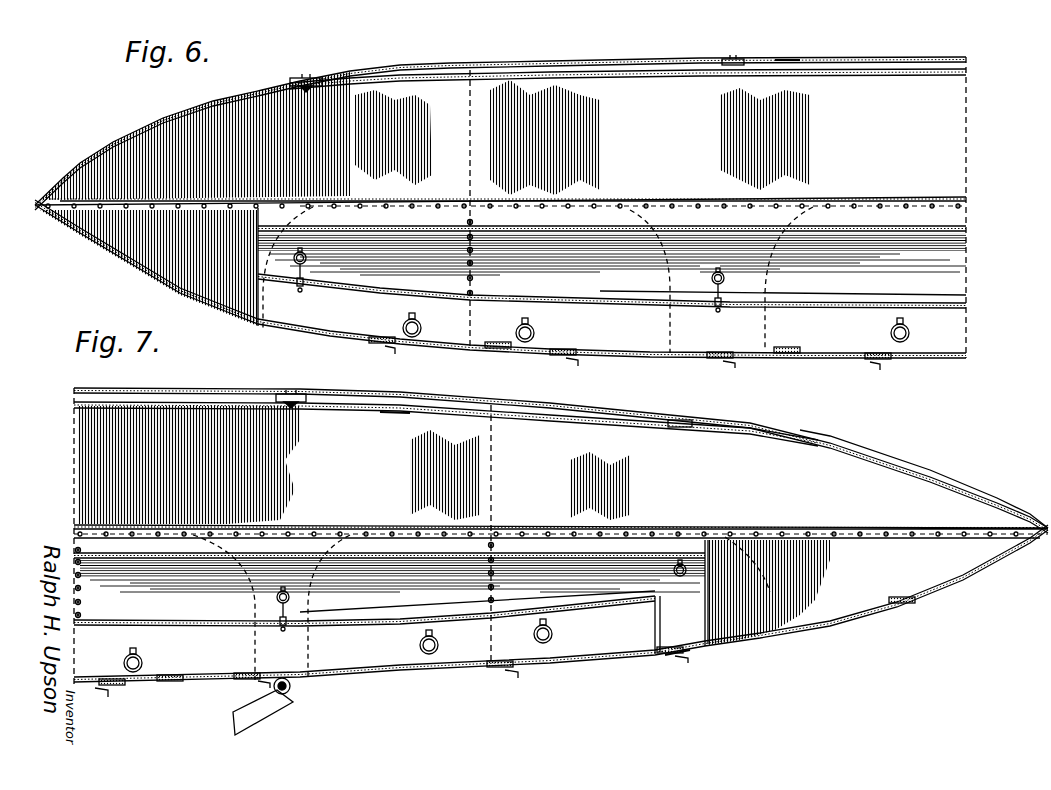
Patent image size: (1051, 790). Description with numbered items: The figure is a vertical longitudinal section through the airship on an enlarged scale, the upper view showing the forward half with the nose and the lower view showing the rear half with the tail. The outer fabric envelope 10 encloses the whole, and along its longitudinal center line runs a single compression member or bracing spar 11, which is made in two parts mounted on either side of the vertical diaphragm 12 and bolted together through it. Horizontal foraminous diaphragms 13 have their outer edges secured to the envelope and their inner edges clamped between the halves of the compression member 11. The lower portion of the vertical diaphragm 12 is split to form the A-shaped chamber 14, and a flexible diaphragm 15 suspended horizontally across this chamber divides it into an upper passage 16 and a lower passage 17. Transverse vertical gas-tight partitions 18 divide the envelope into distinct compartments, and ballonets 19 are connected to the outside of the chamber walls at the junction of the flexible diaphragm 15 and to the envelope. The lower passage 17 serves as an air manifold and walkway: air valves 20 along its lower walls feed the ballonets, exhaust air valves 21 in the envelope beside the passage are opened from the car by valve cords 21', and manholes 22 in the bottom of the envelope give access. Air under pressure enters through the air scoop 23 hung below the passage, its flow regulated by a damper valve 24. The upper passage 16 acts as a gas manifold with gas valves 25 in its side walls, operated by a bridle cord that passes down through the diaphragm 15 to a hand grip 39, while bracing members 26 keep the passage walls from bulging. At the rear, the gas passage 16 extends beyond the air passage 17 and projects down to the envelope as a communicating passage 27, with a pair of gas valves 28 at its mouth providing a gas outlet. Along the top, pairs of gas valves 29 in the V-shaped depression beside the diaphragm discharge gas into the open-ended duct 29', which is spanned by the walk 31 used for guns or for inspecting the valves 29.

In FIG. 6, the envelope 10 is at (264, 88).
In FIG. 7, the envelope 10 is at (872, 452).
In FIG. 6, the compression member 11 is at (877, 204).
In FIG. 7, the compression member 11 is at (781, 524).
In FIG. 6, the vertical diaphragm 12 is at (455, 199).
In FIG. 7, the vertical diaphragm 12 is at (454, 525).
In FIG. 6, the horizontal foraminous diaphragm 13 is at (651, 196).
In FIG. 7, the horizontal foraminous diaphragm 13 is at (880, 524).
In FIG. 6, the A-shaped chamber 14 is at (636, 325).
In FIG. 7, the A-shaped chamber 14 is at (628, 625).
In FIG. 6, the flexible diaphragm 15 is at (924, 299).
In FIG. 7, the flexible diaphragm 15 is at (410, 613).
In FIG. 6, the upper passage 16 is at (612, 267).
In FIG. 7, the upper passage 16 is at (389, 575).
In FIG. 6, the lower passage 17 is at (832, 320).
In FIG. 7, the lower passage 17 is at (220, 640).
In FIG. 6, the transverse vertical gas-tight partition 18 is at (468, 96).
In FIG. 7, the transverse vertical gas-tight partition 18 is at (494, 488).
In FIG. 6, the ballonet 19 is at (668, 289).
In FIG. 7, the ballonet 19 is at (246, 590).
In FIG. 6, the air valve 20 is at (404, 320).
In FIG. 7, the air valve 20 is at (122, 663).
In FIG. 6, the air valve 21 is at (634, 362).
In FIG. 7, the air valve 21 is at (507, 655).
In FIG. 6, the valve cord 21' is at (632, 368).
In FIG. 7, the valve cord 21' is at (391, 688).
In FIG. 6, the manhole 22 is at (497, 342).
In FIG. 7, the manhole 22 is at (172, 675).
In FIG. 7, the air scoop 23 is at (240, 727).
In FIG. 7, the damper valve 24 is at (291, 690).
In FIG. 6, the gas valve 25 is at (307, 260).
In FIG. 7, the gas valve 25 is at (292, 598).
In FIG. 6, the bracing member 26 is at (478, 290).
In FIG. 7, the bracing member 26 is at (86, 602).
In FIG. 7, the communicating passage 27 is at (694, 593).
In FIG. 7, the gas valve 28 is at (682, 656).
In FIG. 6, the gas valve 29 is at (517, 64).
In FIG. 7, the gas valve 29 is at (487, 398).
In FIG. 6, the duct 29' is at (792, 51).
In FIG. 7, the duct 29' is at (394, 426).
In FIG. 6, the walk 31 is at (501, 64).
In FIG. 7, the walk 31 is at (205, 393).
In FIG. 6, the hand grip 39 is at (304, 297).
In FIG. 7, the hand grip 39 is at (281, 633).